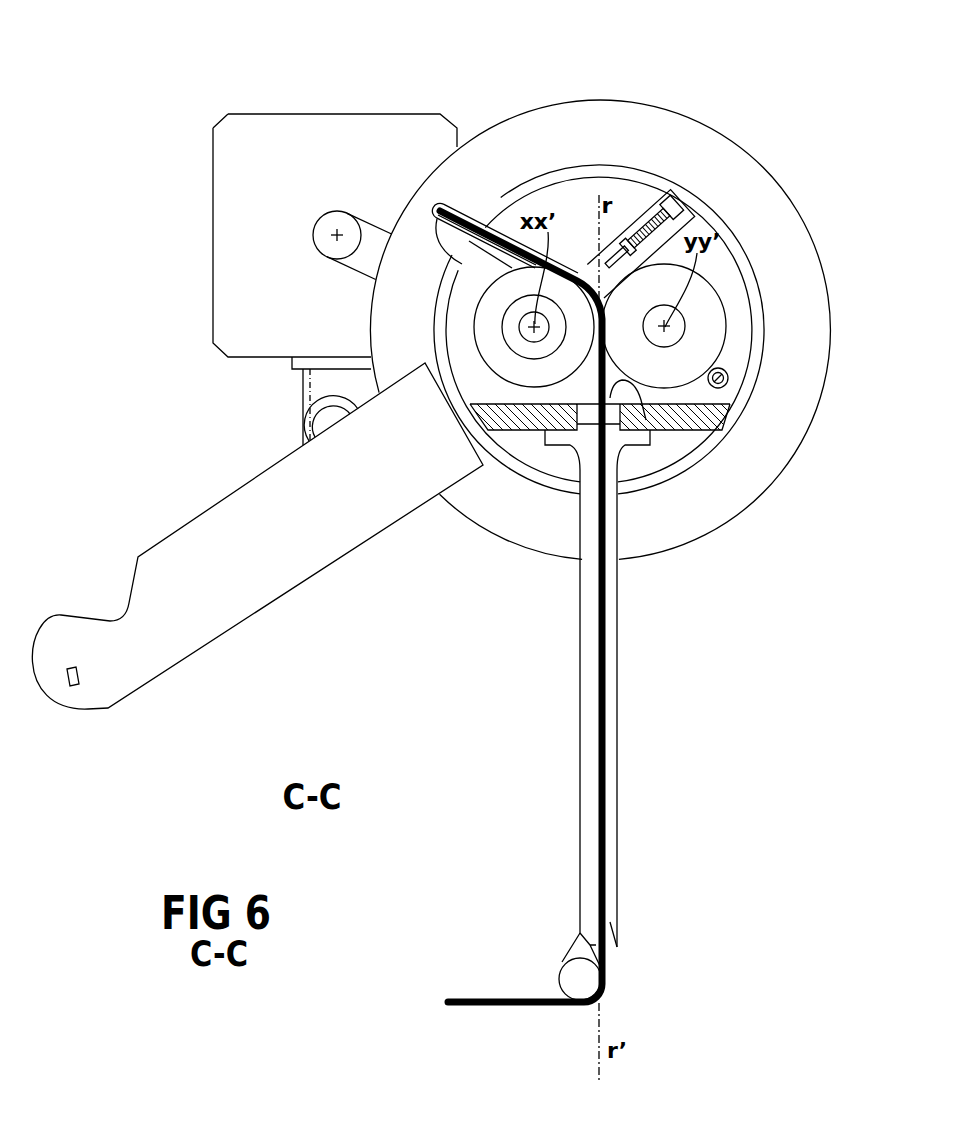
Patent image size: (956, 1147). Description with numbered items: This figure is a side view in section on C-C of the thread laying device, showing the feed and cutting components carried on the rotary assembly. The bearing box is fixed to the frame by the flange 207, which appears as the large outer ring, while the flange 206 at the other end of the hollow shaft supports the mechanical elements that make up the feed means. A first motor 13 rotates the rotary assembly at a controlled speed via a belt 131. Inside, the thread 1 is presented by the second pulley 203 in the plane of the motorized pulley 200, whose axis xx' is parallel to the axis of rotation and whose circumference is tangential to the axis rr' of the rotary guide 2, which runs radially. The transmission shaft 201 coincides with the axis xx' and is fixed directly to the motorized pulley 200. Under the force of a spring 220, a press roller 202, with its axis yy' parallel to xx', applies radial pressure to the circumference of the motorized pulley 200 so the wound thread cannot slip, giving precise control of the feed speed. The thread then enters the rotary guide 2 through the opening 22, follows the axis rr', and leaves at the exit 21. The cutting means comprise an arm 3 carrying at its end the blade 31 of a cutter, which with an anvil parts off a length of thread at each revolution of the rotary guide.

The thread 1 is at (598, 589).
The rotary guide 2 is at (620, 672).
The arm 3 is at (230, 602).
The first motor 13 is at (313, 114).
The exit 21 is at (612, 947).
The opening 22 is at (646, 420).
The blade 31 is at (79, 681).
The belt 131 is at (383, 226).
The motorized pulley 200 is at (477, 316).
The transmission shaft 201 is at (504, 336).
The press roller 202 is at (720, 290).
The second pulley 203 is at (452, 206).
The flange 206 is at (758, 363).
The flange 207 is at (777, 181).
The spring 220 is at (657, 195).